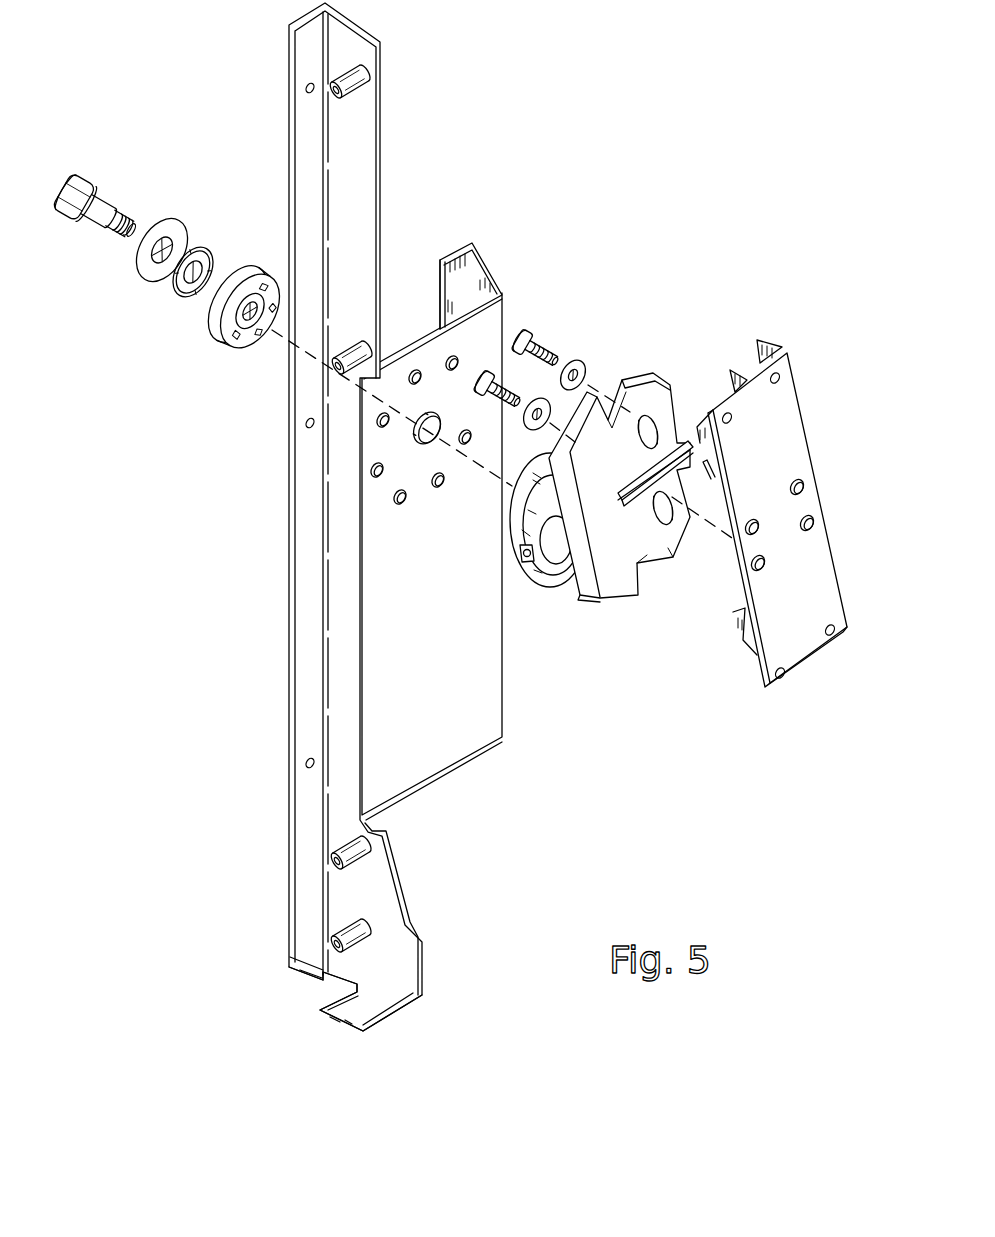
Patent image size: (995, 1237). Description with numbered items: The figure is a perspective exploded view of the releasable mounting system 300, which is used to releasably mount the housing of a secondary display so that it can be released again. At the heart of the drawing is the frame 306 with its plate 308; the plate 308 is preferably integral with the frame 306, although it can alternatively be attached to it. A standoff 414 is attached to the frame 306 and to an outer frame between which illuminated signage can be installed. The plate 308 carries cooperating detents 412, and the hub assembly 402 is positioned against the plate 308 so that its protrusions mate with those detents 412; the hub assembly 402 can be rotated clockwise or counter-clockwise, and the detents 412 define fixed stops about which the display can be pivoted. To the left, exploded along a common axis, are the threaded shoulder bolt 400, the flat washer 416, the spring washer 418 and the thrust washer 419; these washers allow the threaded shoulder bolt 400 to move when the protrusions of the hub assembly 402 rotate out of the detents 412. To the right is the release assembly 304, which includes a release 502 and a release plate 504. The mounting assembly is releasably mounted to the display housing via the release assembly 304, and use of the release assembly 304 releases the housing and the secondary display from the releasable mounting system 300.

The releasable mounting system 300 is at (452, 540).
The release assembly 304 is at (681, 493).
The frame 306 is at (367, 1007).
The plate 308 is at (413, 691).
The threaded shoulder bolt 400 is at (103, 190).
The hub assembly 402 is at (545, 582).
The detents 412 is at (380, 417).
The standoff 414 is at (356, 74).
The flat washer 416 is at (173, 217).
The spring washer 418 is at (207, 247).
The thrust washer 419 is at (213, 337).
The release 502 is at (617, 570).
The release plate 504 is at (810, 637).